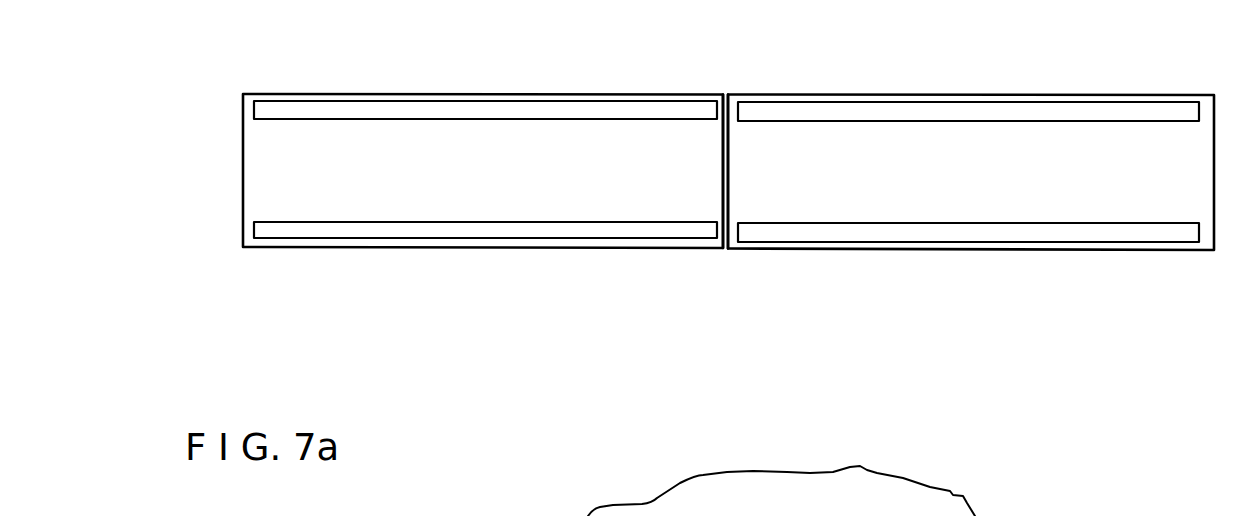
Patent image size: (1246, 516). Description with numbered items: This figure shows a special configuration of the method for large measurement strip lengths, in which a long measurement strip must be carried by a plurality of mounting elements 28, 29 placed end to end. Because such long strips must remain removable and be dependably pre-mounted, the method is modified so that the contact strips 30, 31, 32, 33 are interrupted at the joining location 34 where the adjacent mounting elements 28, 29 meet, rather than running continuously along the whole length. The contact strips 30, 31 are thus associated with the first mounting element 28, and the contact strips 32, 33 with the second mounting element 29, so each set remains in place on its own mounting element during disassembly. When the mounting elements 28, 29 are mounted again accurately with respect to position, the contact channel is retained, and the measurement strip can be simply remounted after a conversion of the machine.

The mounting element 28 is at (485, 158).
The mounting element 29 is at (1000, 152).
The contact strip 30 is at (395, 110).
The contact strip 31 is at (380, 230).
The contact strip 32 is at (872, 110).
The contact strip 33 is at (873, 232).
The joint between panels 34 is at (726, 152).